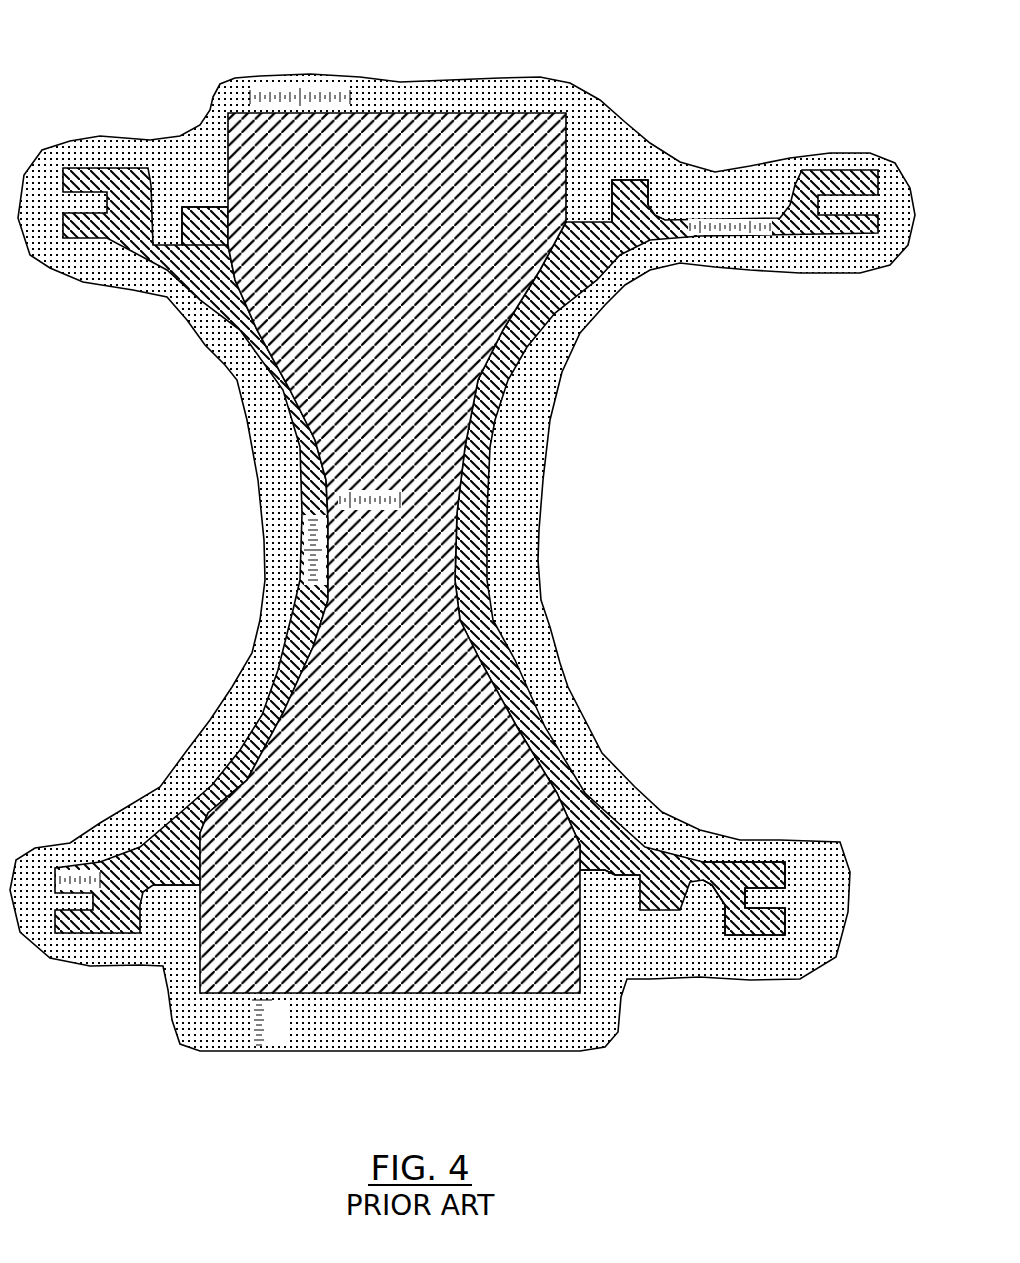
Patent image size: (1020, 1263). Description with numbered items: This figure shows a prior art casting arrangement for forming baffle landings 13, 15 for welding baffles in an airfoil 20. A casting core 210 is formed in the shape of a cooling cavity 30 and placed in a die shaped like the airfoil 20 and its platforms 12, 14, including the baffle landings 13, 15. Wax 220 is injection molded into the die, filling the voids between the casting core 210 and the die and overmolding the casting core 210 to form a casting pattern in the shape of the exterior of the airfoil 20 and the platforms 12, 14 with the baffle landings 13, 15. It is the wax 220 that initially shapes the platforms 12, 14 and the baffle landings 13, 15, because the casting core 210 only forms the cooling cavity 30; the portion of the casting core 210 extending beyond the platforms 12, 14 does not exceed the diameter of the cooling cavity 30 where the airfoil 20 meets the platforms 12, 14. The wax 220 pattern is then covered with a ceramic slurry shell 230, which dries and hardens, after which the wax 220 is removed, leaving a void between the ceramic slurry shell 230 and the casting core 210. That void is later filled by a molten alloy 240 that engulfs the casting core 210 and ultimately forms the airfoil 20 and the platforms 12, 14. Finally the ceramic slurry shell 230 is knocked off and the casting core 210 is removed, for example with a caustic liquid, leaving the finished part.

The cooling cavity 30 is at (460, 527).
The casting core 210 is at (470, 125).
The baffle landing 13 is at (202, 243).
The platform 12 is at (838, 170).
The platform 14 is at (790, 874).
The baffle landing 15 is at (167, 887).
The ceramic slurry shell 230 is at (120, 268).
The airfoil 20 is at (167, 550).
The wax 220 is at (167, 550).
The molten alloy 240 is at (228, 322).